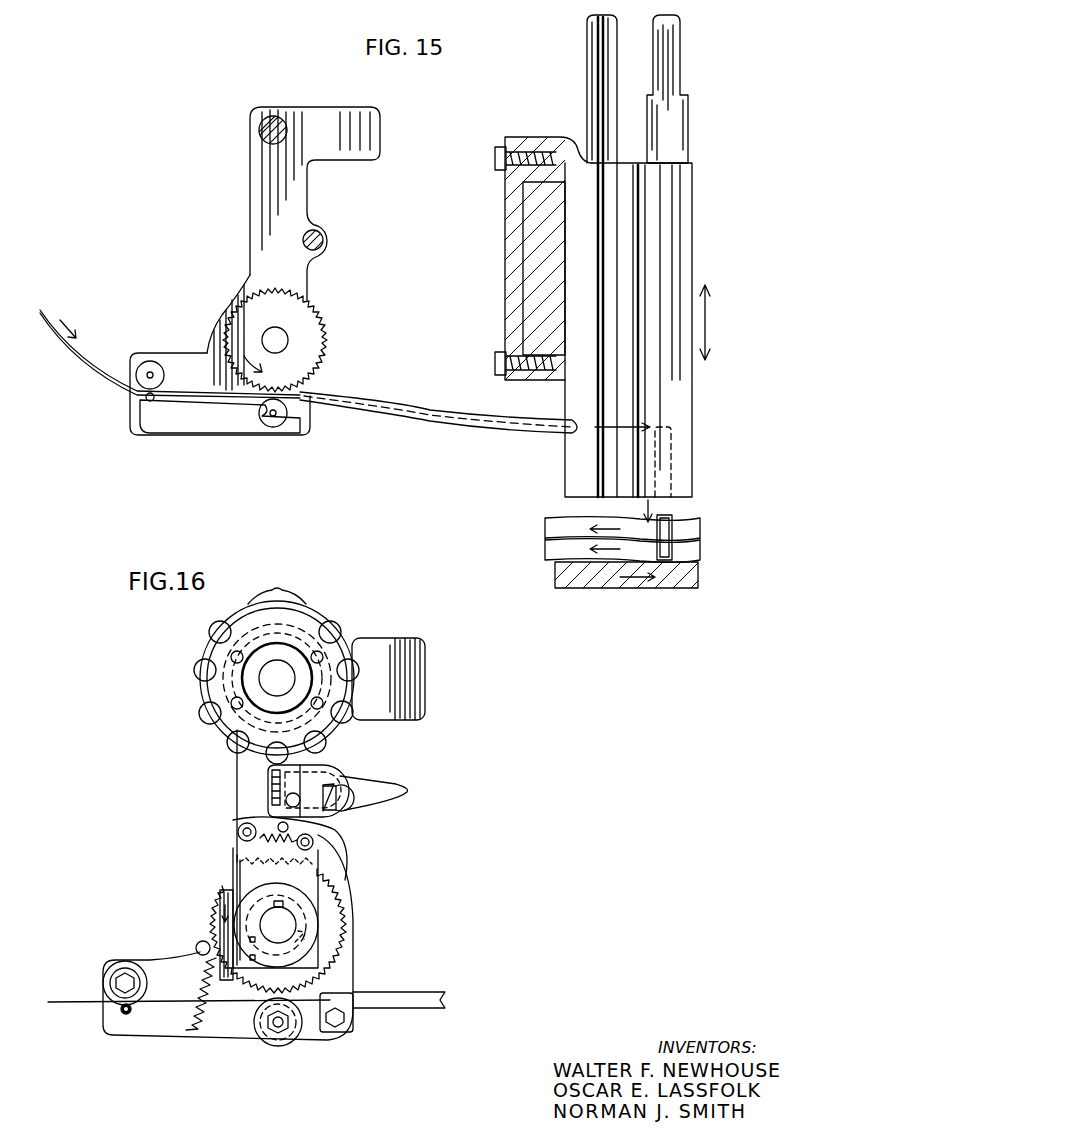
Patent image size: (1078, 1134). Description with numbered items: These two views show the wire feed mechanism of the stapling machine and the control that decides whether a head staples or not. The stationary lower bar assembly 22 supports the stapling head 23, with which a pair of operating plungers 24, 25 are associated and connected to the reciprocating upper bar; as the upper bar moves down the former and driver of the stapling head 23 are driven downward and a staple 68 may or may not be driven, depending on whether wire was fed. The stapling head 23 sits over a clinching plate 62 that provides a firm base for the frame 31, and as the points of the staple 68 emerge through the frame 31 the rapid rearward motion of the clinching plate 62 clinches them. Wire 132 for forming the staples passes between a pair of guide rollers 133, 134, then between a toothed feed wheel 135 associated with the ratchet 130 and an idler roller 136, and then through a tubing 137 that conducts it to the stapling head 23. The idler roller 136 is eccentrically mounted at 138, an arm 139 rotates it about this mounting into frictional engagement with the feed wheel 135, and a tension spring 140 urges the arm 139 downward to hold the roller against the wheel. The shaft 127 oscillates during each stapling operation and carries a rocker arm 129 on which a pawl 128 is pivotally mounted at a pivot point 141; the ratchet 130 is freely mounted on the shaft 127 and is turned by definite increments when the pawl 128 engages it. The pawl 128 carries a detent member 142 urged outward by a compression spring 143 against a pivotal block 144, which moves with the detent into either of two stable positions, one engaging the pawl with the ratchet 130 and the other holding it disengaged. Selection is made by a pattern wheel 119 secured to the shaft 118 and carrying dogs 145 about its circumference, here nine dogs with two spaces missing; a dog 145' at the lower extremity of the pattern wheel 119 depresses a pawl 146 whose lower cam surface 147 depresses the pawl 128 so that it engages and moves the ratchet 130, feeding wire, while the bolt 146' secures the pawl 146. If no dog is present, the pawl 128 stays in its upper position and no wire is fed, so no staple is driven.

In FIG. 15, the lower bar assembly 22 is at (512, 258).
In FIG. 15, the stapling head 23 is at (693, 380).
In FIG. 15, the operating plunger 24 is at (590, 118).
In FIG. 15, the operating plunger 25 is at (683, 55).
In FIG. 15, the frame 31 is at (547, 520).
In FIG. 15, the clinching plate 62 is at (677, 590).
In FIG. 15, the staple 68 is at (700, 540).
In FIG. 15, the shaft 118 is at (268, 120).
In FIG. 16, the shaft 118 is at (283, 665).
In FIG. 16, the pattern wheel 119 is at (249, 622).
In FIG. 15, the shaft 127 is at (282, 340).
In FIG. 16, the shaft 127 is at (262, 925).
In FIG. 16, the pawl 128 is at (237, 870).
In FIG. 16, the rocker arm 129 is at (240, 862).
In FIG. 15, the ratchet 130 is at (310, 325).
In FIG. 16, the ratchet 130 is at (217, 898).
In FIG. 15, the wire 132 is at (107, 385).
In FIG. 16, the wire 132 is at (158, 1003).
In FIG. 15, the guide roller 133 is at (148, 402).
In FIG. 16, the guide roller 133 is at (123, 1013).
In FIG. 15, the guide roller 134 is at (150, 361).
In FIG. 16, the guide roller 134 is at (147, 961).
In FIG. 16, the toothed feed wheel 135 is at (348, 993).
In FIG. 15, the idler roller 136 is at (268, 423).
In FIG. 16, the idler roller 136 is at (293, 1040).
In FIG. 15, the tubing 137 is at (400, 396).
In FIG. 16, the tubing 137 is at (410, 995).
In FIG. 16, the eccentric pivotal mounting 138 is at (272, 1047).
In FIG. 16, the arm 139 is at (226, 998).
In FIG. 16, the tension spring 140 is at (203, 1008).
In FIG. 16, the pivot point 141 is at (317, 840).
In FIG. 16, the detent member 142 is at (238, 858).
In FIG. 16, the compression spring 143 is at (340, 873).
In FIG. 16, the pivotal block 144 is at (273, 822).
In FIG. 16, the dog 145 is at (248, 692).
In FIG. 16, the dog 145' is at (201, 796).
In FIG. 16, the pawl 146 is at (262, 791).
In FIG. 15, the bolt 146' is at (346, 233).
In FIG. 16, the bolt 146' is at (350, 776).
In FIG. 16, the lower cam surface 147 is at (277, 813).